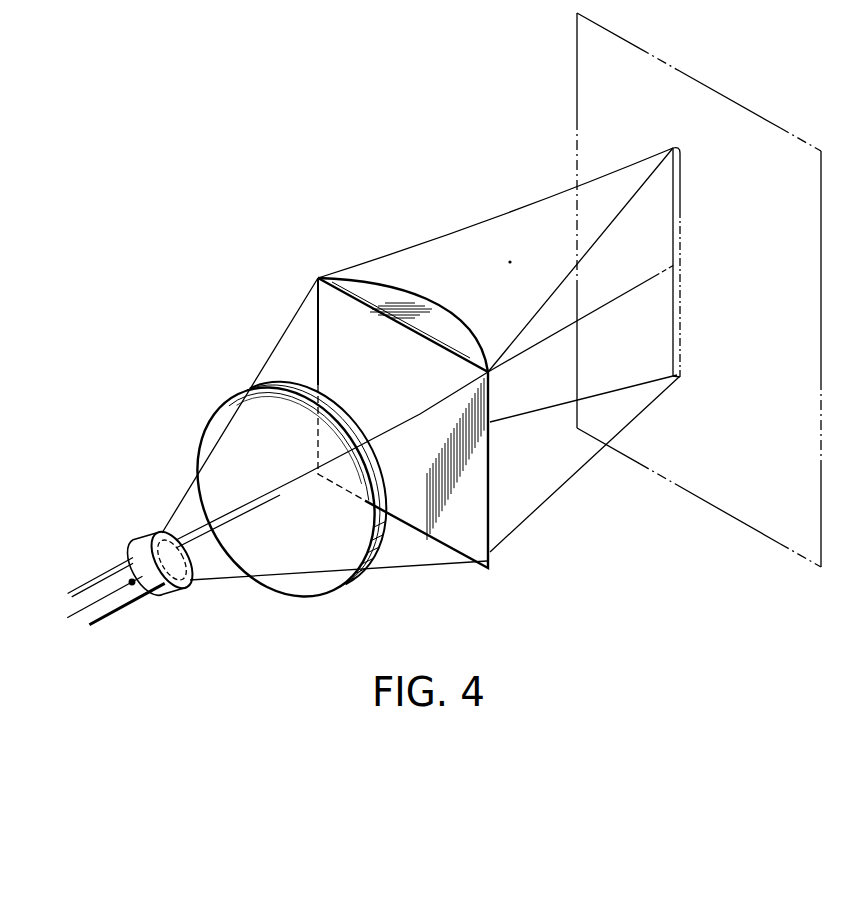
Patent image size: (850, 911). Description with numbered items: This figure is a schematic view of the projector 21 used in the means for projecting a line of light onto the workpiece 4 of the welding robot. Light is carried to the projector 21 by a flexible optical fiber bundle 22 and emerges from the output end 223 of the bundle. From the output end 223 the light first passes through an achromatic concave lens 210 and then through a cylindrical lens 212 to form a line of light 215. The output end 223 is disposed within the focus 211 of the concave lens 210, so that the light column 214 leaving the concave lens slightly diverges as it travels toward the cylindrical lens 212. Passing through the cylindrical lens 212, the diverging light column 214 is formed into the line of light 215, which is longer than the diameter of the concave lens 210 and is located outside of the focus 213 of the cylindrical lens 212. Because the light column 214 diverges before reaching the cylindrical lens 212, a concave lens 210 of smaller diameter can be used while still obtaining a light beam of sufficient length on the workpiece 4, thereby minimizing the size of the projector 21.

The workpiece 4 is at (712, 492).
The projector 21 is at (403, 449).
The achromatic concave lens 210 is at (322, 588).
The focus of the concave lens 211 is at (134, 584).
The cylindrical lens 212 is at (447, 318).
The focus of the cylindrical lens 213 is at (573, 325).
The light column 214 is at (406, 569).
The line of light 215 is at (676, 312).
The flexible optical fiber bundle 22 is at (100, 585).
The output end of the optical fiber bundle 223 is at (167, 530).